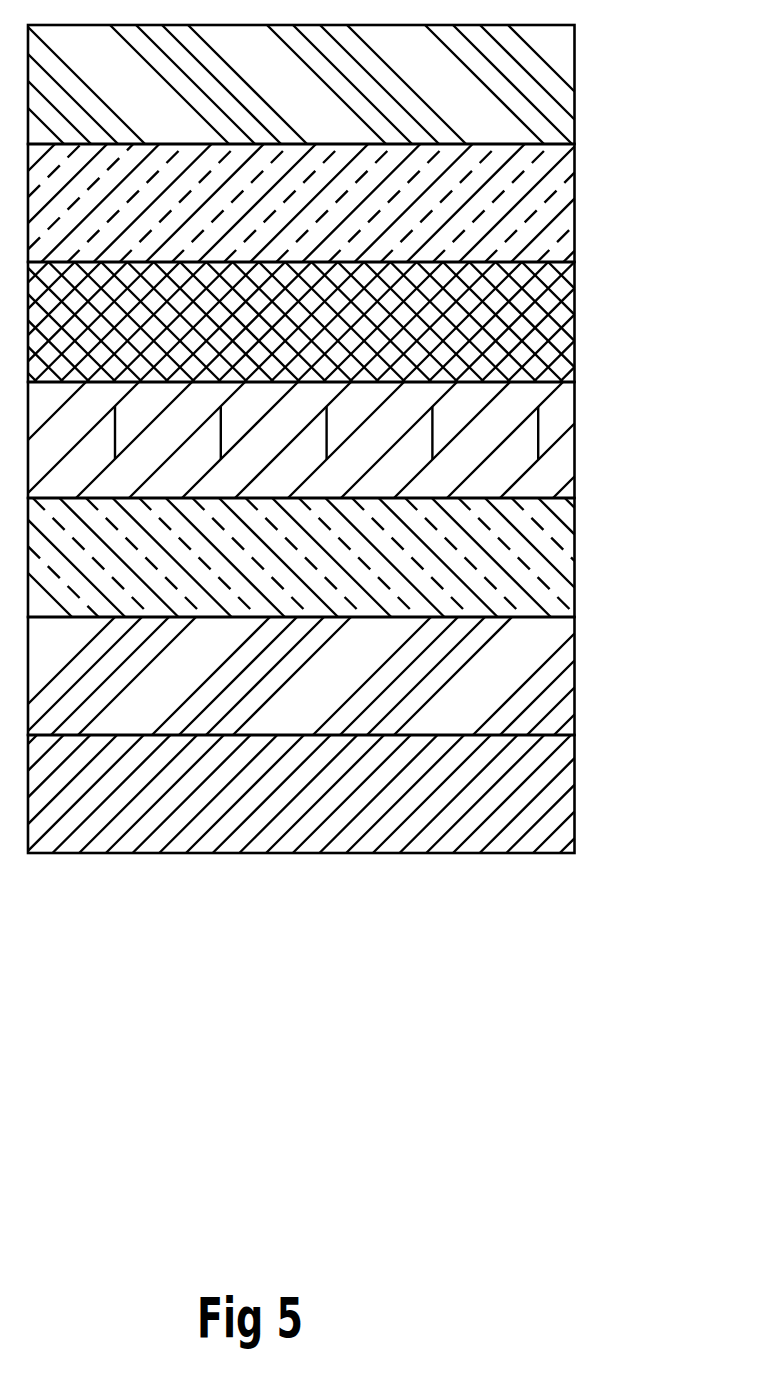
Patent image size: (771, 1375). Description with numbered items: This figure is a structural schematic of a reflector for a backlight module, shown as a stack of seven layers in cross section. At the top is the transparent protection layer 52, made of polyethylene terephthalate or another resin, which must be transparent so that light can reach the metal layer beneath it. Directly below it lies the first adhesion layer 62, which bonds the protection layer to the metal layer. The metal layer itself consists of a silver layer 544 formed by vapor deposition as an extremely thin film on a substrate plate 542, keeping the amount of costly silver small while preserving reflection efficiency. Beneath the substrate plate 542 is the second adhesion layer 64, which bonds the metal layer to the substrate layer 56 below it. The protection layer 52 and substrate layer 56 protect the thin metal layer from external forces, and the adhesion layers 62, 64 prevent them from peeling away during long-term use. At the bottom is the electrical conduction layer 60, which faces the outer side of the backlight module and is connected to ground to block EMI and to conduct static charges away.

The transparent protection layer 52 is at (560, 55).
The first adhesion layer 62 is at (560, 168).
The silver layer 544 is at (560, 288).
The substrate plate 542 is at (565, 413).
The second adhesion layer 64 is at (565, 542).
The substrate layer 56 is at (563, 682).
The electrical conduction layer 60 is at (567, 775).